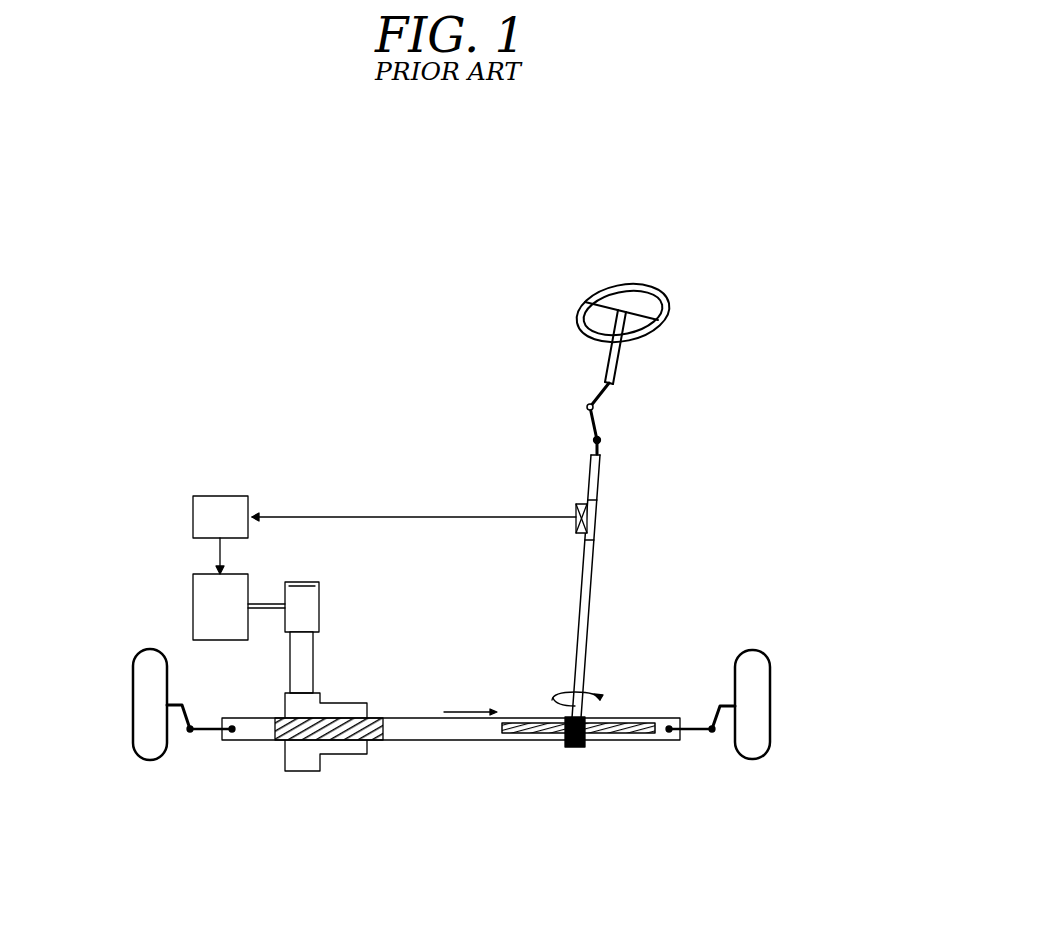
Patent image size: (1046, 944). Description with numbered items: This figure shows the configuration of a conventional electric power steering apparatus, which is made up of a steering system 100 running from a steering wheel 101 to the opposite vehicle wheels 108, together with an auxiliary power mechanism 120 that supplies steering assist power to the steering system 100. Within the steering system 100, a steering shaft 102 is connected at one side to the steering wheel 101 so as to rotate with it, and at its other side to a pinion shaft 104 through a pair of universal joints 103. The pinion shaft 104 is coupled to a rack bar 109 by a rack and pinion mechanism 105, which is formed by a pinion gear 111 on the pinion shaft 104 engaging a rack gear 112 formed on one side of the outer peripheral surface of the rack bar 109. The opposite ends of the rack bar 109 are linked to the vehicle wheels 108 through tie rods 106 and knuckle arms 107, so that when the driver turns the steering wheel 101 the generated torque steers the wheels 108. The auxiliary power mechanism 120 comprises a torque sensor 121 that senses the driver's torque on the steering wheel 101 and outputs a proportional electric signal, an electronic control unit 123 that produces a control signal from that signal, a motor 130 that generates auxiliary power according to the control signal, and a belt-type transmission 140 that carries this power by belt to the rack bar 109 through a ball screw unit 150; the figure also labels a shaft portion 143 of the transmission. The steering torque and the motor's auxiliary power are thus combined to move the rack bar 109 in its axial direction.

The steering system 100 is at (731, 215).
The steering wheel 101 is at (583, 306).
The steering shaft 102 is at (625, 354).
The universal joints 103 is at (600, 440).
The pinion shaft 104 is at (593, 566).
The rack and pinion mechanism 105 is at (628, 806).
The tie rods 106 is at (690, 730).
The knuckle arms 107 is at (717, 716).
The vehicle wheels 108 is at (140, 680).
The rack bar 109 is at (462, 738).
The pinion gear 111 is at (578, 748).
The rack gear 112 is at (622, 735).
The auxiliary power mechanism 120 is at (335, 459).
The torque sensor 121 is at (581, 504).
The electronic control unit 123 is at (193, 514).
The motor 130 is at (193, 584).
The belt-type transmission 140 is at (320, 648).
The motor shaft 143 is at (314, 660).
The ball screw unit 150 is at (330, 765).